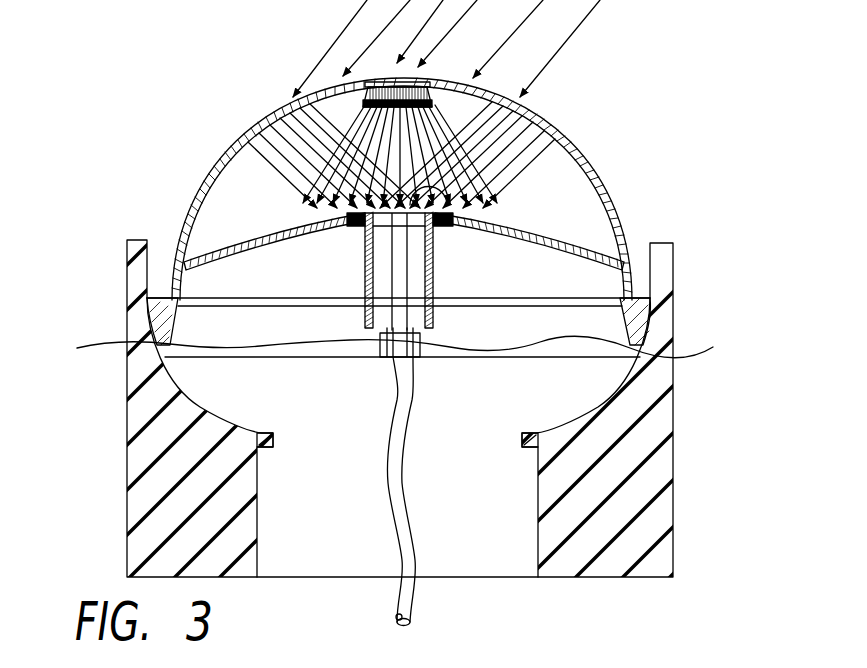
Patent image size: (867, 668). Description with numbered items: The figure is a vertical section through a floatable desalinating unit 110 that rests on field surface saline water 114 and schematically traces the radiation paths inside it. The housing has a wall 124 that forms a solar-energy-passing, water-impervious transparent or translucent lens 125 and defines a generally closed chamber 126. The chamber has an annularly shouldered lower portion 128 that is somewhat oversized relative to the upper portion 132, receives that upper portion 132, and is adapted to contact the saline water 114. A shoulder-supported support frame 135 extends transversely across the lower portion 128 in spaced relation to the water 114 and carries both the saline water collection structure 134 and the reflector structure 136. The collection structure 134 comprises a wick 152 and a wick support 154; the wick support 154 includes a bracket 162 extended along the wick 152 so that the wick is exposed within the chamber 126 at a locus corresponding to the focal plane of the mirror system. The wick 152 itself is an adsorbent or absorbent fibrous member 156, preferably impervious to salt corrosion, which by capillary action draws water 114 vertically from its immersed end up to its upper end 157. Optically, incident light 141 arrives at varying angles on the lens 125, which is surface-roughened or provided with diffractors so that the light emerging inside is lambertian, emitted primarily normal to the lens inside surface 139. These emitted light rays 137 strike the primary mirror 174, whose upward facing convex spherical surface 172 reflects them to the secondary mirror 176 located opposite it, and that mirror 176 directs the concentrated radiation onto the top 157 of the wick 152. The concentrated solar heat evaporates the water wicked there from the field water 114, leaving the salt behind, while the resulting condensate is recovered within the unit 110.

The unit 110 is at (147, 75).
The saline water 114 is at (200, 385).
The wall 124 is at (530, 116).
The lens 125 is at (282, 108).
The chamber 126 is at (551, 168).
The lower portion 128 is at (673, 458).
The upper portion 132 is at (613, 220).
The saline water collection structure 134 is at (445, 287).
The support frame 135 is at (236, 298).
The reflector structure 136 is at (235, 207).
The light rays 137 is at (512, 188).
The inside surface 139 is at (578, 170).
The incident light 141 is at (548, 43).
The wick 152 is at (398, 230).
The wick support 154 is at (437, 325).
The fibrous member 156 is at (381, 325).
The upper end 157 is at (463, 213).
The bracket 162 is at (367, 262).
The spherical surface 172 is at (210, 226).
The primary mirror 174 is at (256, 227).
The secondary mirror 176 is at (427, 88).